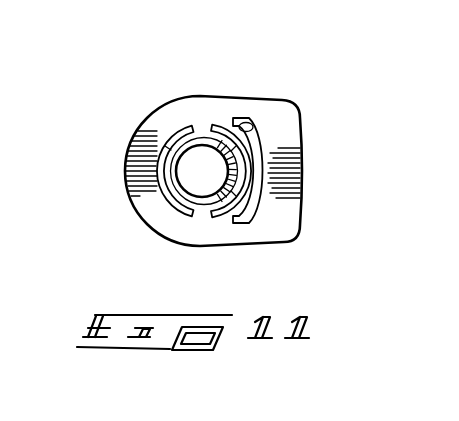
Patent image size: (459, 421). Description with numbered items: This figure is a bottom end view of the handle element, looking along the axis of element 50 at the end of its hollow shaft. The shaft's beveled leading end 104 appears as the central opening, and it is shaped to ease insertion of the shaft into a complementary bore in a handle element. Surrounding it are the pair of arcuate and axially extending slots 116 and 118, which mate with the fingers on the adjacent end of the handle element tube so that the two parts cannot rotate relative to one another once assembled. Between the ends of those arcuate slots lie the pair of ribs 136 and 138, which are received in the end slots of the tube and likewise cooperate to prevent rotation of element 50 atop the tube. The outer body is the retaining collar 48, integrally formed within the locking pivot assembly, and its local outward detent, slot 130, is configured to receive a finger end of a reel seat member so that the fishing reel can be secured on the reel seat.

The element 50 is at (300, 118).
The retaining collar 48 is at (305, 189).
The beveled leading end 104 is at (170, 147).
The rib 136 is at (200, 132).
The rib 138 is at (200, 213).
The arcuate slot 118 is at (168, 197).
The arcuate slot 116 is at (240, 210).
The slot 130 is at (238, 119).